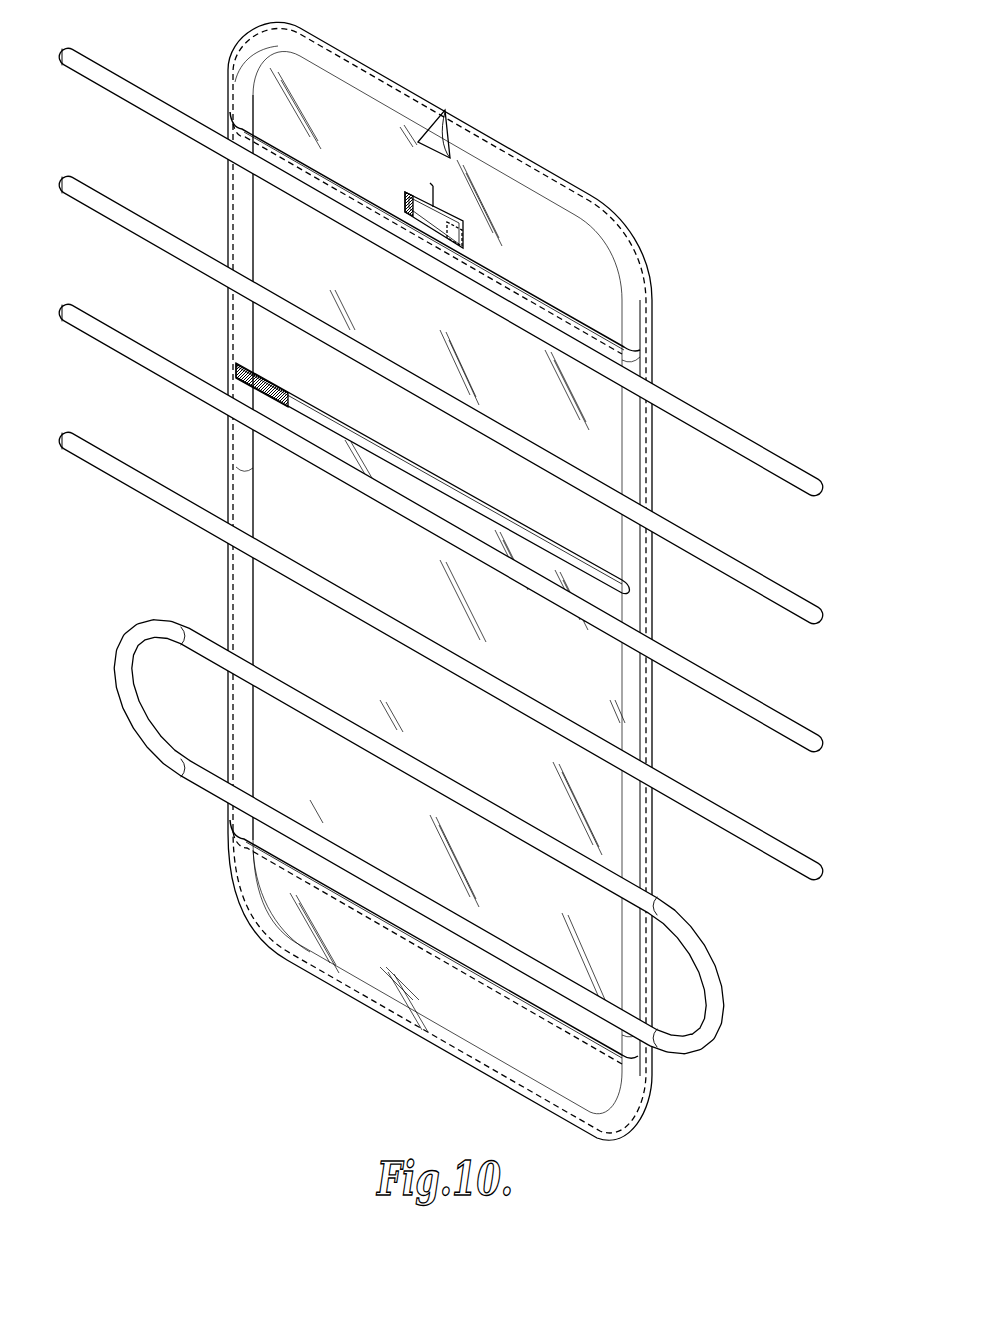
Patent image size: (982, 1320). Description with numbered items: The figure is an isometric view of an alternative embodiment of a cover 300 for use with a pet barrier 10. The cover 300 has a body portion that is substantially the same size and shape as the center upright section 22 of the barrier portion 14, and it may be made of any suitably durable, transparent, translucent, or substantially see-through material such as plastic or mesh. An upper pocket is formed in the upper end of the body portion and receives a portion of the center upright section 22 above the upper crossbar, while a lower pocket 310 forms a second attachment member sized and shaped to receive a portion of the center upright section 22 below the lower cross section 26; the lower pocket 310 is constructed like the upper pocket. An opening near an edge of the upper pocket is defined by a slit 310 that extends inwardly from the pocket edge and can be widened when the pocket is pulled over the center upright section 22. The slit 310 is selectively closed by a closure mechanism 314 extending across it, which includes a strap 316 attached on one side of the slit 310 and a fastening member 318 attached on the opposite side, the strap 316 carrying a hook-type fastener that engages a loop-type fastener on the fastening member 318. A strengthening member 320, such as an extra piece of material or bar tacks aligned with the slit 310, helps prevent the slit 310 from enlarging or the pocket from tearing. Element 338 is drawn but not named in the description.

The pet barrier 10 is at (441, 594).
The barrier portion 14 is at (441, 548).
The center upright section 22 is at (653, 373).
The lower cross section 26 is at (733, 991).
The cover 300 is at (478, 594).
The lower pocket 310 is at (436, 189).
The closure mechanism 314 is at (464, 128).
The strap 316 is at (517, 196).
The fastening member 318 is at (405, 192).
The strengthening member 320 is at (448, 114).
The closure strip 338 is at (586, 562).